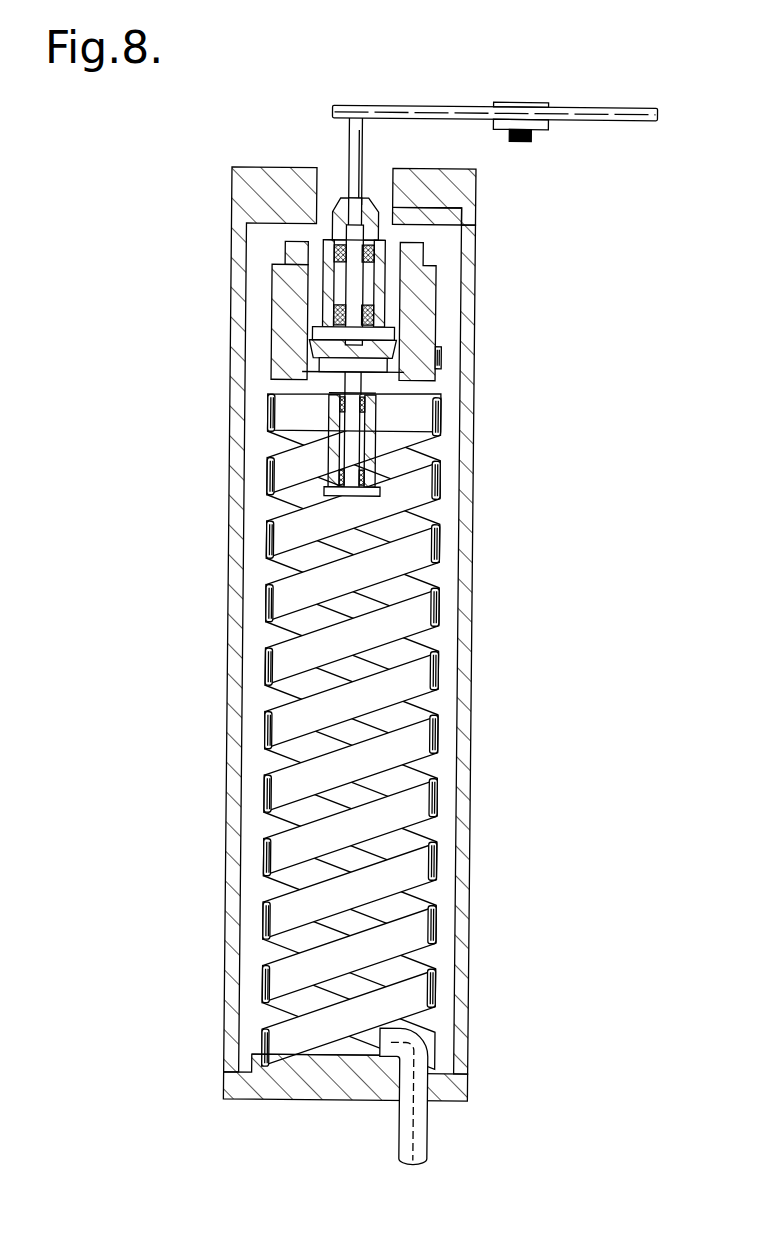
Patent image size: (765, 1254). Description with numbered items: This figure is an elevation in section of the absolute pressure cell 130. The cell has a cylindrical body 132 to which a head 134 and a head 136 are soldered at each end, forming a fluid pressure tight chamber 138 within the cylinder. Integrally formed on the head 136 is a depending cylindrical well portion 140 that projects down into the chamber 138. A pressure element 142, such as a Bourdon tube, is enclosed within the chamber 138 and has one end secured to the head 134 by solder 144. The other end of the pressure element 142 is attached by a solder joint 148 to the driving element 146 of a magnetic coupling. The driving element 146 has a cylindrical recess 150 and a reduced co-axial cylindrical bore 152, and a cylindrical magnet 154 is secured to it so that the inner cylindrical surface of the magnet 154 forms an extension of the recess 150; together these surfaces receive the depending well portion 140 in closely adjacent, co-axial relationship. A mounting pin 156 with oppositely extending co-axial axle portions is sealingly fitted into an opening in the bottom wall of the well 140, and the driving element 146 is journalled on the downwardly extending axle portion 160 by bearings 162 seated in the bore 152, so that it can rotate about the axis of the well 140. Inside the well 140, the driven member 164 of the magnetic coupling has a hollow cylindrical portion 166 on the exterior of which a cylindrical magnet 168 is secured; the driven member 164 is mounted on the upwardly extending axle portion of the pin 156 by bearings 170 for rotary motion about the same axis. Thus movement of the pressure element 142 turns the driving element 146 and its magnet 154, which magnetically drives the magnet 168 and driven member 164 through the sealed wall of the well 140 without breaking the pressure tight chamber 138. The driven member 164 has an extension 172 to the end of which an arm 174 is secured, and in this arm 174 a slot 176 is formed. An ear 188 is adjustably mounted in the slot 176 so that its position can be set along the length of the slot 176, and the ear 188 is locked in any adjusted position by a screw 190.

The absolute pressure cell 130 is at (355, 660).
The cylindrical body 132 is at (468, 653).
The head 134 is at (275, 1088).
The head 136 is at (460, 182).
The chamber 138 is at (450, 569).
The depending cylindrical well portion 140 is at (305, 232).
The pressure element 142 is at (354, 730).
The solder 144 is at (307, 1058).
The driving element 146 is at (285, 344).
The solder joint 148 is at (430, 352).
The cylindrical recess 150 is at (432, 373).
The cylindrical bore 152 is at (300, 446).
The cylindrical magnet 154 is at (380, 250).
The mounting pin 156 is at (312, 365).
The axle portion 160 is at (358, 438).
The bearings 162 is at (310, 427).
The driven member 164 is at (331, 192).
The hollow cylindrical portion 166 is at (376, 214).
The cylindrical magnet 168 is at (292, 264).
The bearings 170 is at (355, 284).
The extension 172 is at (358, 140).
The arm 174 is at (419, 107).
The slot 176 is at (603, 105).
The ear 188 is at (545, 128).
The screw 190 is at (515, 101).